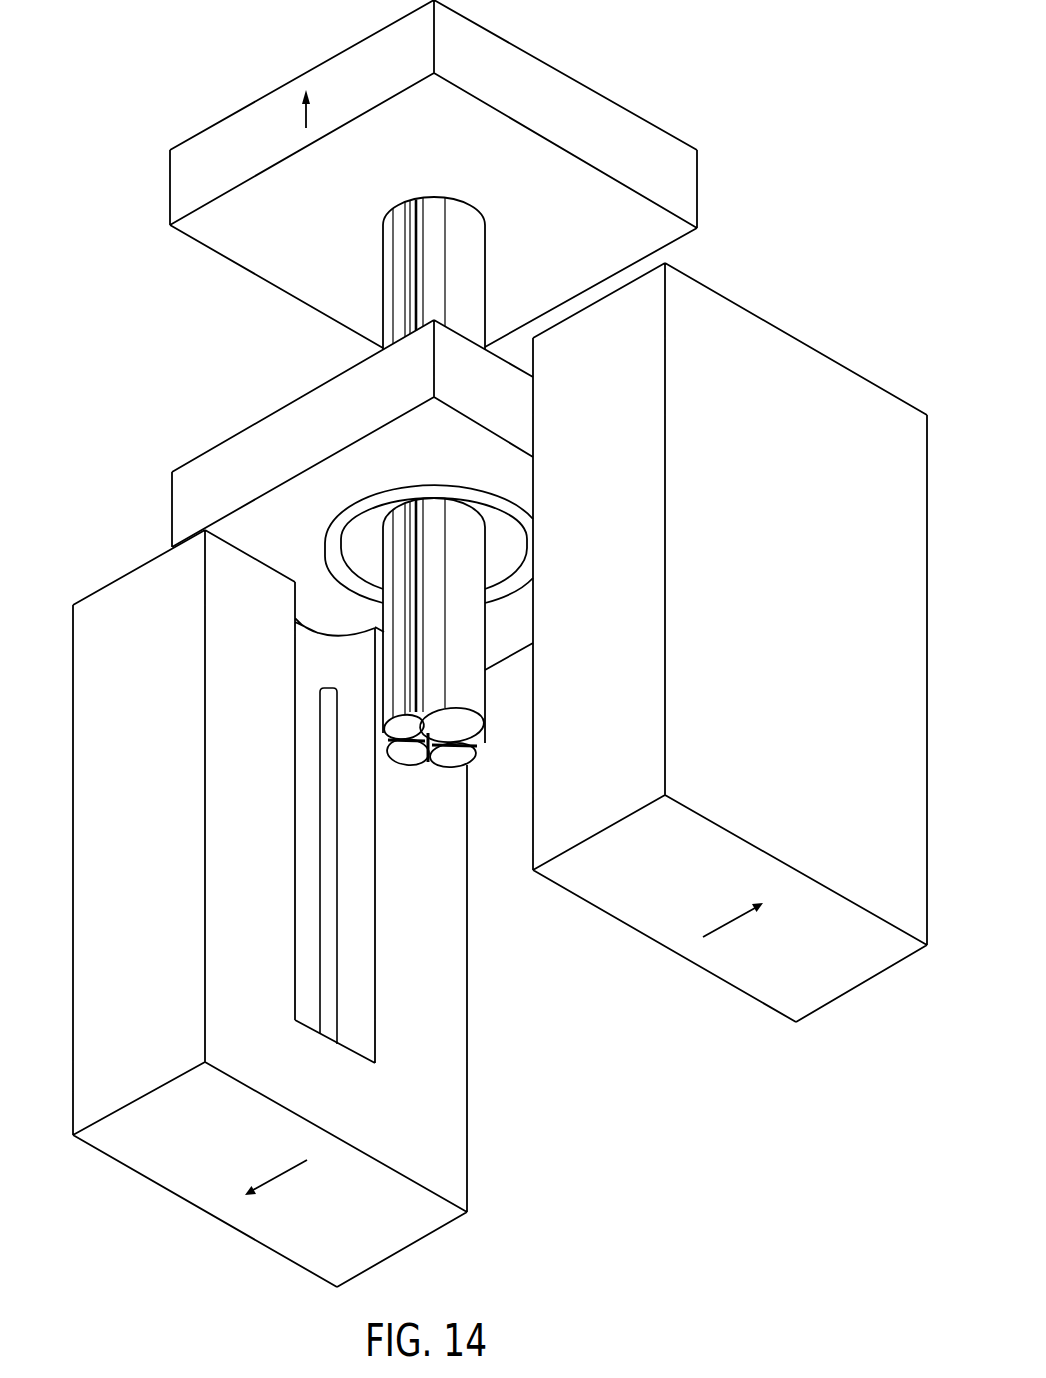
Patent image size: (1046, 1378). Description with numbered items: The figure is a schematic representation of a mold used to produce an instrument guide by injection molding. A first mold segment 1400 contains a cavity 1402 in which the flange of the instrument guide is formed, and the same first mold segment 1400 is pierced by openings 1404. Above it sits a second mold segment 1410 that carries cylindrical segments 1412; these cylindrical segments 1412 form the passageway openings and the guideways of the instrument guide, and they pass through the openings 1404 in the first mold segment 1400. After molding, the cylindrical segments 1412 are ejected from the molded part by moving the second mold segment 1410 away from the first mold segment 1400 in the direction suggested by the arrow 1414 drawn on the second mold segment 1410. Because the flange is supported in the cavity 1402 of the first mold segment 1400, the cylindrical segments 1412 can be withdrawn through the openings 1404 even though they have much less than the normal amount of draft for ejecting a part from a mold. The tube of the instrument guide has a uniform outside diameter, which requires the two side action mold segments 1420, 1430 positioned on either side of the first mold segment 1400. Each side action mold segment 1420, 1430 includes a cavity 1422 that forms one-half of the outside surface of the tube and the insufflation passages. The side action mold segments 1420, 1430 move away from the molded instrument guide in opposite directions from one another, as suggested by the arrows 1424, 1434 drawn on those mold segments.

The first mold segment 1400 is at (268, 450).
The cavity 1402 is at (513, 572).
The openings 1404 is at (472, 505).
The second mold segment 1410 is at (633, 145).
The cylindrical segments 1412 is at (467, 692).
The arrow 1414 is at (308, 108).
The side action mold segment 1420 is at (146, 613).
The cavity 1422 is at (308, 848).
The arrow 1424 is at (273, 1177).
The side action mold segment 1430 is at (763, 383).
The arrow 1434 is at (737, 922).